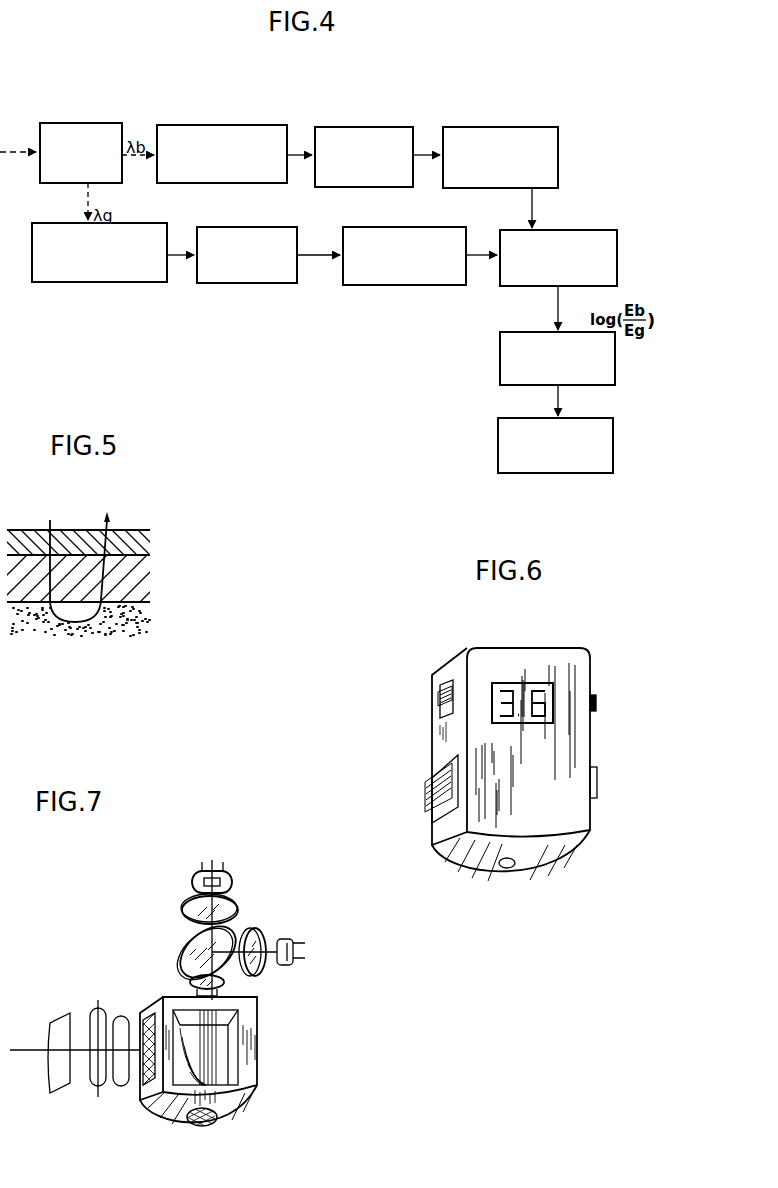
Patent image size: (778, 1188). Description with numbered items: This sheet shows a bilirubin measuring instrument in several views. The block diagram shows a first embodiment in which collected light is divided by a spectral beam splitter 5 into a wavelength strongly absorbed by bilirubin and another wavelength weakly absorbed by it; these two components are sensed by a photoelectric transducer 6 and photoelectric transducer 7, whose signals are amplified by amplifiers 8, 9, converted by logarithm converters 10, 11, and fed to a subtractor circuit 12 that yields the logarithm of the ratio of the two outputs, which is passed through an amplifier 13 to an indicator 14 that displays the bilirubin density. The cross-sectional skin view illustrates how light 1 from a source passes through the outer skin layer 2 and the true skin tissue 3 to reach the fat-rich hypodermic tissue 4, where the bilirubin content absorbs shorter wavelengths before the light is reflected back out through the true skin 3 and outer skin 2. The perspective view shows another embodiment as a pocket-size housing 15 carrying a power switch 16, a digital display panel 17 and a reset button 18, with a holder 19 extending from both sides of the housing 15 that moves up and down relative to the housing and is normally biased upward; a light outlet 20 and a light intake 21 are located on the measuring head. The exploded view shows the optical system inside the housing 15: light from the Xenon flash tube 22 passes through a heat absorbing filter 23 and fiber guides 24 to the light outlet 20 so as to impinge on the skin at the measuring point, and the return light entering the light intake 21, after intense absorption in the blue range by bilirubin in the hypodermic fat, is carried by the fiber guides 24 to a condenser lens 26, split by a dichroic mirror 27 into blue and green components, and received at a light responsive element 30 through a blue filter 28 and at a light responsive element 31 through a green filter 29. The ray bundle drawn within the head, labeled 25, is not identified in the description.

In FIG. 5, the light 1 is at (50, 525).
In FIG. 5, the outer skin layer 2 is at (130, 536).
In FIG. 5, the true skin tissue 3 is at (142, 572).
In FIG. 5, the hypodermic tissue 4 is at (140, 615).
In FIG. 4, the spectral beam splitter 5 is at (43, 177).
In FIG. 4, the photoelectric transducer 6 is at (234, 183).
In FIG. 4, the photoelectric transducer 7 is at (87, 282).
In FIG. 4, the amplifier 8 is at (357, 187).
In FIG. 4, the amplifier 9 is at (248, 283).
In FIG. 4, the logarithm converter 10 is at (493, 188).
In FIG. 4, the logarithm converter 11 is at (407, 285).
In FIG. 4, the subtractor circuit 12 is at (617, 255).
In FIG. 4, the amplifier 13 is at (615, 360).
In FIG. 4, the indicator 14 is at (613, 447).
In FIG. 6, the housing 15 is at (570, 657).
In FIG. 6, the power switch 16 is at (438, 705).
In FIG. 6, the digital display panel 17 is at (502, 687).
In FIG. 6, the reset button 18 is at (598, 700).
In FIG. 6, the holder 19 is at (425, 795).
In FIG. 6, the light outlet 20 is at (492, 862).
In FIG. 7, the light outlet 20 is at (197, 1128).
In FIG. 6, the light intake 21 is at (515, 866).
In FIG. 7, the light intake 21 is at (217, 1121).
In FIG. 7, the Xenon flash tube 22 is at (96, 1012).
In FIG. 7, the heat absorbing filter 23 is at (122, 1020).
In FIG. 7, the fiber guides 24 is at (165, 1090).
In FIG. 7, the optical fiber bundle 25 is at (212, 1058).
In FIG. 7, the condenser lens 26 is at (224, 984).
In FIG. 7, the dichroic mirror 27 is at (192, 945).
In FIG. 7, the blue filter 28 is at (258, 930).
In FIG. 7, the green filter 29 is at (234, 914).
In FIG. 7, the light responsive element 30 is at (290, 938).
In FIG. 7, the light responsive element 31 is at (215, 865).